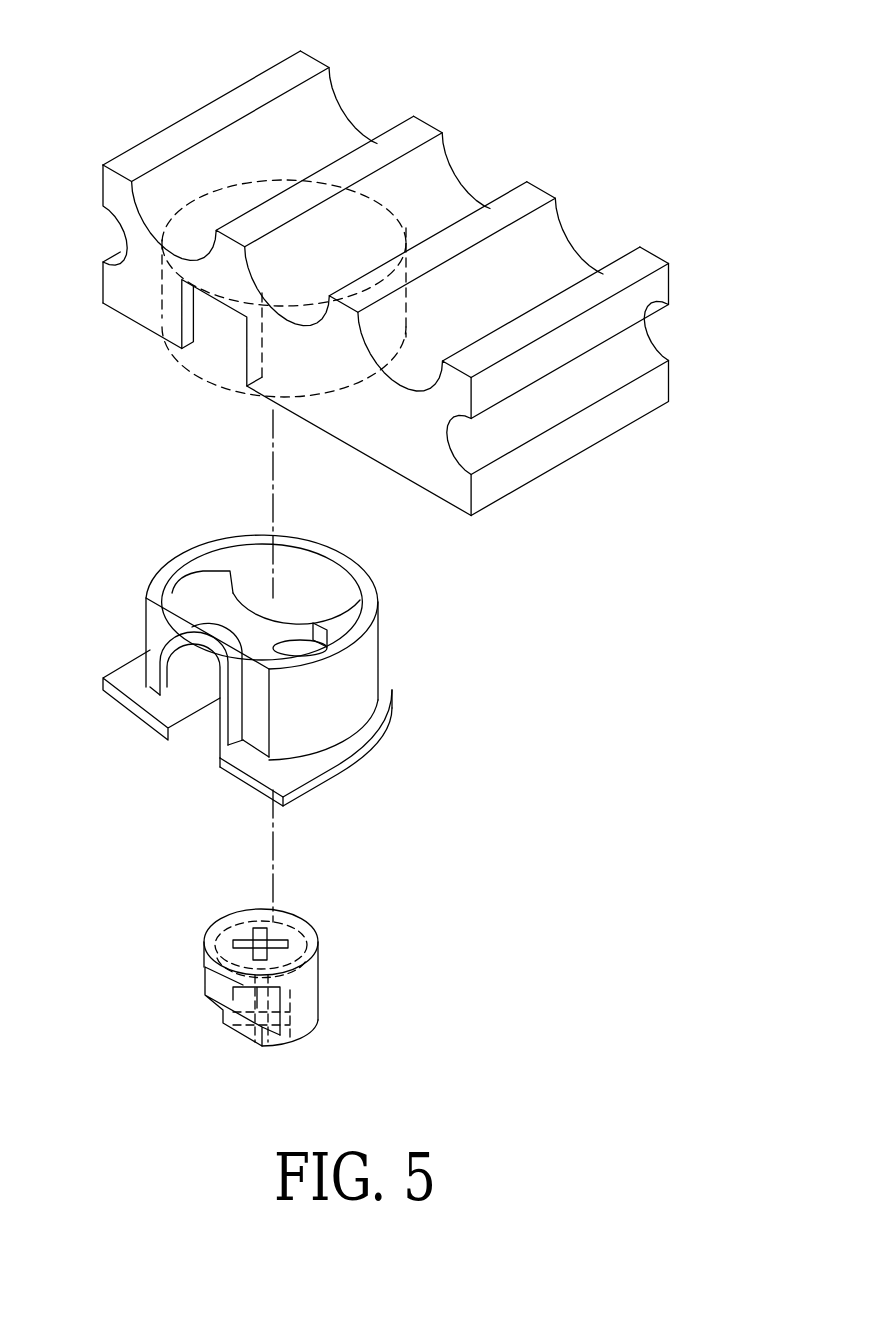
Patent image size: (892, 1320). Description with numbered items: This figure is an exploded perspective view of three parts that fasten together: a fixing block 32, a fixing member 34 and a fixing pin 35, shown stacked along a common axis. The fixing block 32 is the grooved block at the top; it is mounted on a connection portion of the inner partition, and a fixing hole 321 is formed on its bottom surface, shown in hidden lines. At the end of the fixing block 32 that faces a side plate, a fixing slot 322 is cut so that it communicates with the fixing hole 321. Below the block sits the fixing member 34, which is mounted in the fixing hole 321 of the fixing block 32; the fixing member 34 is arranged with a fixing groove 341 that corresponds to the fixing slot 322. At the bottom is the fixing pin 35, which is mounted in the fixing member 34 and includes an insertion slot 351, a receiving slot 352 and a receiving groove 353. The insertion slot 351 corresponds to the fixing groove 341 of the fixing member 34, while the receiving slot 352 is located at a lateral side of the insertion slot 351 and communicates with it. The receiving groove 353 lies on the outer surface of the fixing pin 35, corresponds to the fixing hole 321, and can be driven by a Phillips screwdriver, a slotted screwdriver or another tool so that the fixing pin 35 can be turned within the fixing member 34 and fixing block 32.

The fixing block 32 is at (386, 290).
The fixing hole 321 is at (395, 201).
The fixing slot 322 is at (211, 340).
The fixing member 34 is at (304, 676).
The fixing groove 341 is at (203, 727).
The fixing pin 35 is at (267, 994).
The insertion slot 351 is at (206, 996).
The receiving slot 352 is at (232, 910).
The receiving groove 353 is at (290, 1040).